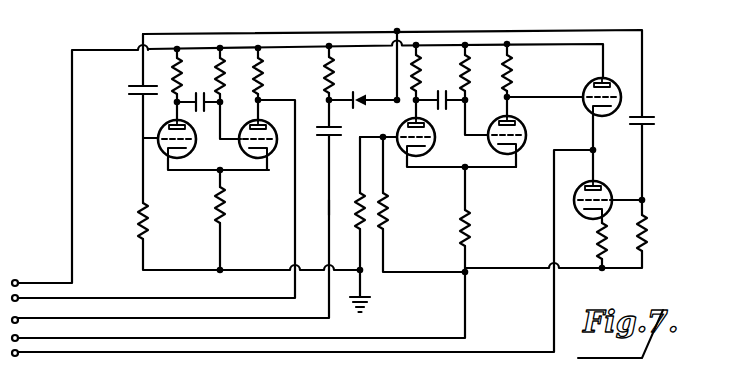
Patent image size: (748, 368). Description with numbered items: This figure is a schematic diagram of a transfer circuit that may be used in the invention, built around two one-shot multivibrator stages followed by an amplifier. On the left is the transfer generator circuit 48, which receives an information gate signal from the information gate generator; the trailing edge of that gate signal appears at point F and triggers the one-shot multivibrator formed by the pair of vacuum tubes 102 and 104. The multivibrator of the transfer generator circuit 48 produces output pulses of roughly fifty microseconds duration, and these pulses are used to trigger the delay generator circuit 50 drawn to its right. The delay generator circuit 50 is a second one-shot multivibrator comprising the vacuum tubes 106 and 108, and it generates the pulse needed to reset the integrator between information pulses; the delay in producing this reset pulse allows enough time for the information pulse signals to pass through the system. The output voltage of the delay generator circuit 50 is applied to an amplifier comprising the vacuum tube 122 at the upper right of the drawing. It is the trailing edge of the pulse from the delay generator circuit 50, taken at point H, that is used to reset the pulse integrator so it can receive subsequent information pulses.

The transfer generator circuit 48 is at (267, 31).
The delay generator circuit 50 is at (518, 28).
The vacuum tube 102 is at (196, 146).
The vacuum tube 104 is at (277, 148).
The vacuum tube 106 is at (435, 144).
The vacuum tube 108 is at (527, 131).
The vacuum tube 122 is at (601, 77).
The point F is at (329, 207).
The point H is at (554, 218).